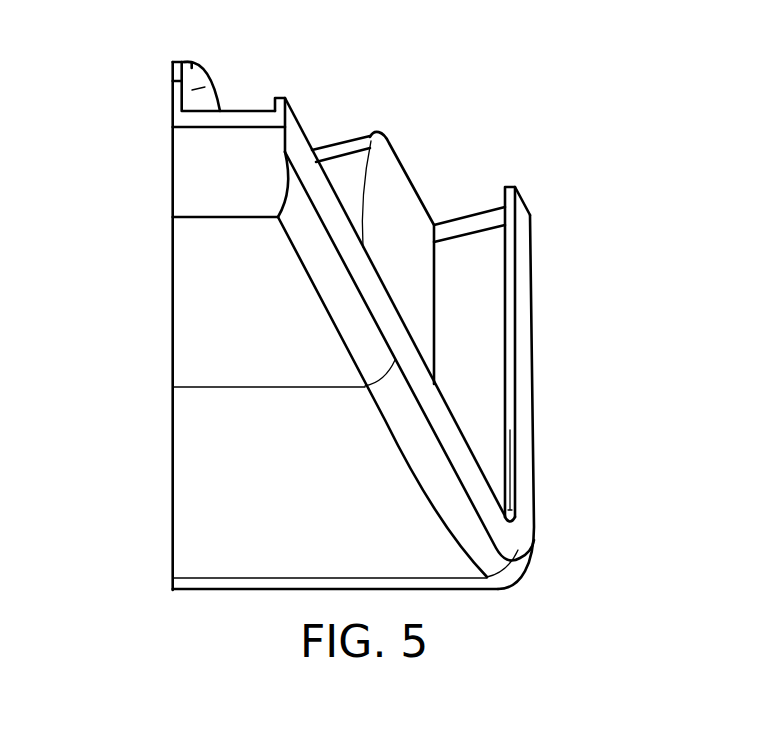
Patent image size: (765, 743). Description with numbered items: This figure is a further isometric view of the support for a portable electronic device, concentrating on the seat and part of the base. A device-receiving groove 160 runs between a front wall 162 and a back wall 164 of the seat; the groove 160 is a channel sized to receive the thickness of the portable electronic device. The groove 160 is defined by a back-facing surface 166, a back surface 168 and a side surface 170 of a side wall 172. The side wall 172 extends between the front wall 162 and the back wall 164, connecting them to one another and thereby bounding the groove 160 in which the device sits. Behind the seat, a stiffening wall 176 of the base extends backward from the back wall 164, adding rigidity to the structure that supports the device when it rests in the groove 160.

The device-receiving groove 160 is at (481, 302).
The front wall 162 is at (528, 477).
The back wall 164 is at (394, 194).
The back-facing surface 166 is at (265, 99).
The back surface 168 is at (212, 72).
The side surface 170 is at (487, 385).
The side wall 172 is at (220, 122).
The stiffening wall 176 is at (205, 310).